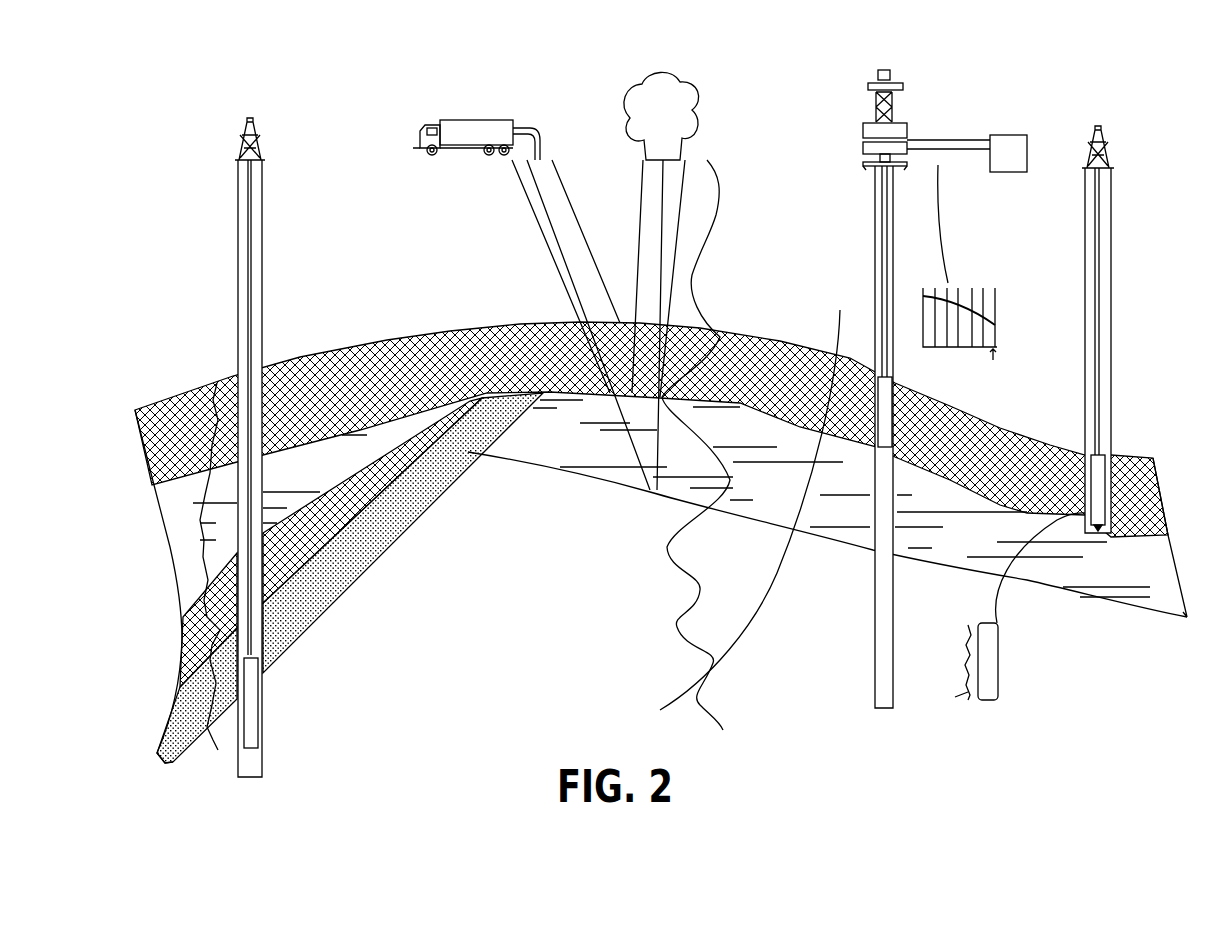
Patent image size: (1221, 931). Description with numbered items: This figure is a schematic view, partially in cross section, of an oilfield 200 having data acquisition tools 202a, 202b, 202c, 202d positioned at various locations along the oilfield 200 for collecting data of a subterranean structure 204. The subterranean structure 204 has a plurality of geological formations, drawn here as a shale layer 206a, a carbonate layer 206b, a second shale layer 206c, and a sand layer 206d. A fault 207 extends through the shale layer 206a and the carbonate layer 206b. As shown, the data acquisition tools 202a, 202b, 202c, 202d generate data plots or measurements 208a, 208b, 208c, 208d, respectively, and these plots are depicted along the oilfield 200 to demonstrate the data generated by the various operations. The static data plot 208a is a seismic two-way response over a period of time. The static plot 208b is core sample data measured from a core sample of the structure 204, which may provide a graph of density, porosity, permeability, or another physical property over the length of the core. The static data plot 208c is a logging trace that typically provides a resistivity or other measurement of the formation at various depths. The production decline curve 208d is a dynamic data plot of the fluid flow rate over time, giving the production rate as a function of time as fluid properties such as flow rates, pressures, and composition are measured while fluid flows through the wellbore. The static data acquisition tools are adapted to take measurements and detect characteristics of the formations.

The oilfield 200 is at (653, 421).
The data acquisition tool 202a is at (445, 118).
The data acquisition tool 202b is at (1113, 527).
The data acquisition tool 202c is at (258, 715).
The data acquisition tool 202d is at (877, 445).
The subterranean structure 204 is at (661, 586).
The shale layer 206a is at (474, 379).
The carbonate layer 206b is at (610, 459).
The shale layer 206c is at (367, 493).
The sand layer 206d is at (423, 506).
The fault 207 is at (840, 327).
The static data plot 208a is at (692, 598).
The static plot 208b is at (968, 633).
The static data plot 208c is at (205, 518).
The production decline curve 208d is at (958, 348).